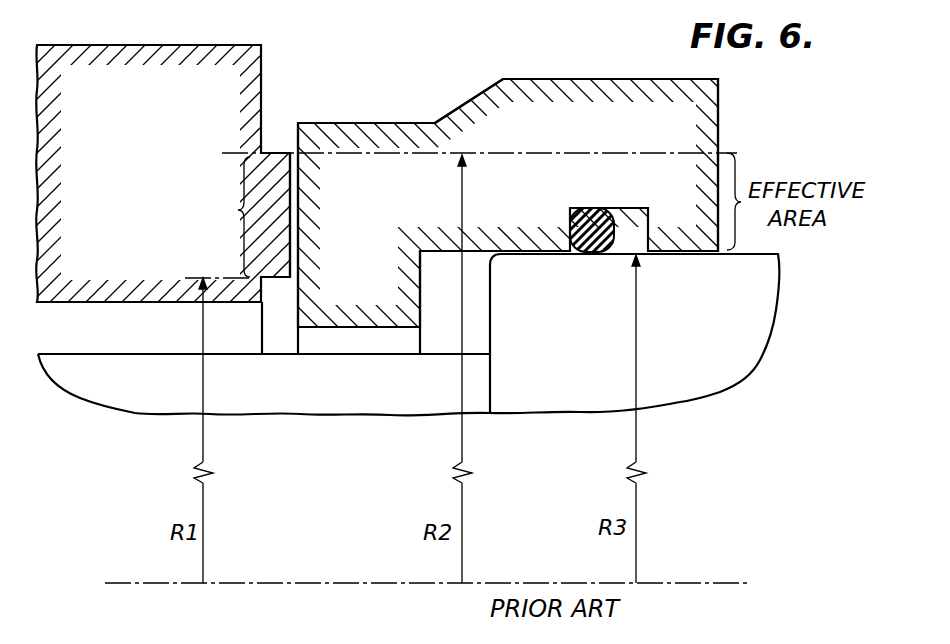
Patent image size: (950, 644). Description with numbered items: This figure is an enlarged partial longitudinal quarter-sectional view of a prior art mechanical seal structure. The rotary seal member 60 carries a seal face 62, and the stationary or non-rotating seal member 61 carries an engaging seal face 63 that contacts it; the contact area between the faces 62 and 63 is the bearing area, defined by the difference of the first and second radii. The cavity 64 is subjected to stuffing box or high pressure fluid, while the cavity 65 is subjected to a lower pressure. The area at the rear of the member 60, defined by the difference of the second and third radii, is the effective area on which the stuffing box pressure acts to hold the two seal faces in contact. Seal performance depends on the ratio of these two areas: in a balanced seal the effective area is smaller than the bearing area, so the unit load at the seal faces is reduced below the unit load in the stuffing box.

The rotary seal member 60 is at (583, 86).
The stationary seal member 61 is at (192, 53).
The seal face 62 is at (290, 204).
The engaging seal face 63 is at (290, 230).
The cavity 64 is at (400, 108).
The cavity 65 is at (480, 328).